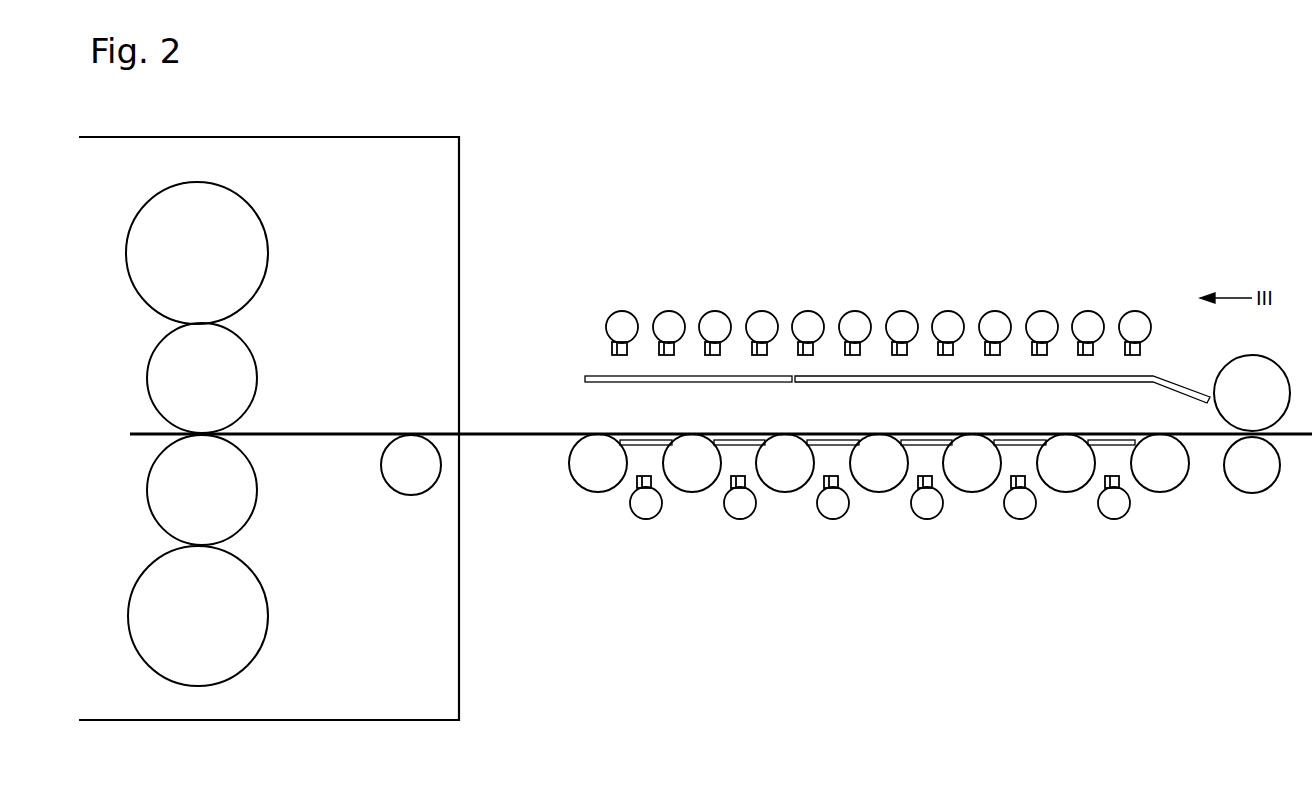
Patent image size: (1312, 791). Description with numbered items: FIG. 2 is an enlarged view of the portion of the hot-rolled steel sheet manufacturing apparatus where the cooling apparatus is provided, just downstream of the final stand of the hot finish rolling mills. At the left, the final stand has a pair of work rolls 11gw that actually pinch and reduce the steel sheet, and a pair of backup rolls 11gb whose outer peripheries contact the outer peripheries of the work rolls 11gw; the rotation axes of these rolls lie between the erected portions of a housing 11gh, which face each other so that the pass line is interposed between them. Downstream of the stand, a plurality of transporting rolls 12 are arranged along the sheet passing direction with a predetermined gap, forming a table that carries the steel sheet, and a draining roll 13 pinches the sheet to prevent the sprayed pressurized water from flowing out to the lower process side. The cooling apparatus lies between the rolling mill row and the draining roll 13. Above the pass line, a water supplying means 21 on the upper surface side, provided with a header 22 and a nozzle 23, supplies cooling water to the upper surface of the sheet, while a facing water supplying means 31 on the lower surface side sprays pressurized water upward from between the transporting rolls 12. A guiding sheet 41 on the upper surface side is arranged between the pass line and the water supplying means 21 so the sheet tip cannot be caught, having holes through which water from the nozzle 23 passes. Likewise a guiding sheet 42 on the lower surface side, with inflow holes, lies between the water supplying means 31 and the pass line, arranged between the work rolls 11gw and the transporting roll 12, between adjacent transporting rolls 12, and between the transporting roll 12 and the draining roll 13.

The backup roll 11gb is at (143, 232).
The work roll 11gw is at (158, 357).
The housing 11gh is at (449, 701).
The transporting roll 12 is at (412, 484).
The draining roll 13 is at (1258, 513).
The water supplying means on upper surface side 21 is at (627, 299).
The header 22 is at (714, 318).
The nozzle 23 is at (860, 350).
The water supplying means on lower surface side 31 is at (652, 538).
The guiding sheet on upper surface side 41 is at (592, 376).
The guiding sheet on lower surface side 42 is at (845, 448).